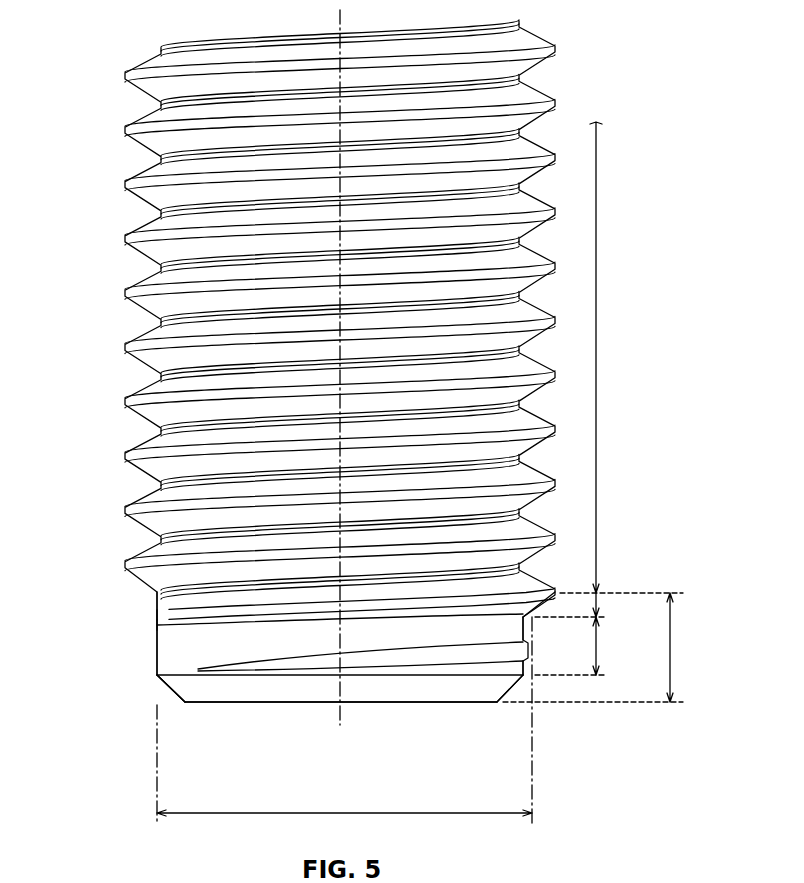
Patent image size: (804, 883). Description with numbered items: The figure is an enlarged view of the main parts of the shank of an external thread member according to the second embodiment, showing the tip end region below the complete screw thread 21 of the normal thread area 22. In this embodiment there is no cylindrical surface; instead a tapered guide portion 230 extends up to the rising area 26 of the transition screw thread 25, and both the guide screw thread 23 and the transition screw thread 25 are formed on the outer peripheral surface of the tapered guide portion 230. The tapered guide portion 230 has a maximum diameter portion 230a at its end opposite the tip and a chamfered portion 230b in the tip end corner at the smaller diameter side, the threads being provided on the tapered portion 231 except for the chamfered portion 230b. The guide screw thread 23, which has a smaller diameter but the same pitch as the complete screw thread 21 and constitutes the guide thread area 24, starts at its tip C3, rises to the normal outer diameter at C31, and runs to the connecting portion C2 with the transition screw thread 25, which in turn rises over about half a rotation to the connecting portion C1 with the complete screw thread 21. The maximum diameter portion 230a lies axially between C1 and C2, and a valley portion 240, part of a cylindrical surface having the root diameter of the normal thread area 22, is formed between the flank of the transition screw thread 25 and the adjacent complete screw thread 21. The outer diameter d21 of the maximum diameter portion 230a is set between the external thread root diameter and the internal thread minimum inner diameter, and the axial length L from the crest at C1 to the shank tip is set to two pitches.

The complete screw thread 21 is at (503, 537).
The normal thread area 22 is at (609, 357).
The guide screw thread 23 is at (383, 668).
The guide thread area 24 is at (605, 643).
The transition screw thread 25 is at (450, 612).
The rising area 26 is at (605, 605).
The valley portion 240 is at (307, 590).
The tapered guide portion 230 is at (162, 660).
The maximum diameter portion 230a is at (155, 597).
The chamfered portion 230b is at (185, 703).
The tapered portion 231 is at (144, 652).
The connecting portion with the complete screw thread C1 is at (555, 590).
The connecting portion with the guide screw thread C2 is at (152, 622).
The tip of the guide screw thread C3 is at (198, 672).
The position where the guide screw thread has risen to the normal outer diameter C31 is at (333, 670).
The axial length L is at (596, 647).
The outer diameter of the maximum diameter portion d21 is at (344, 720).